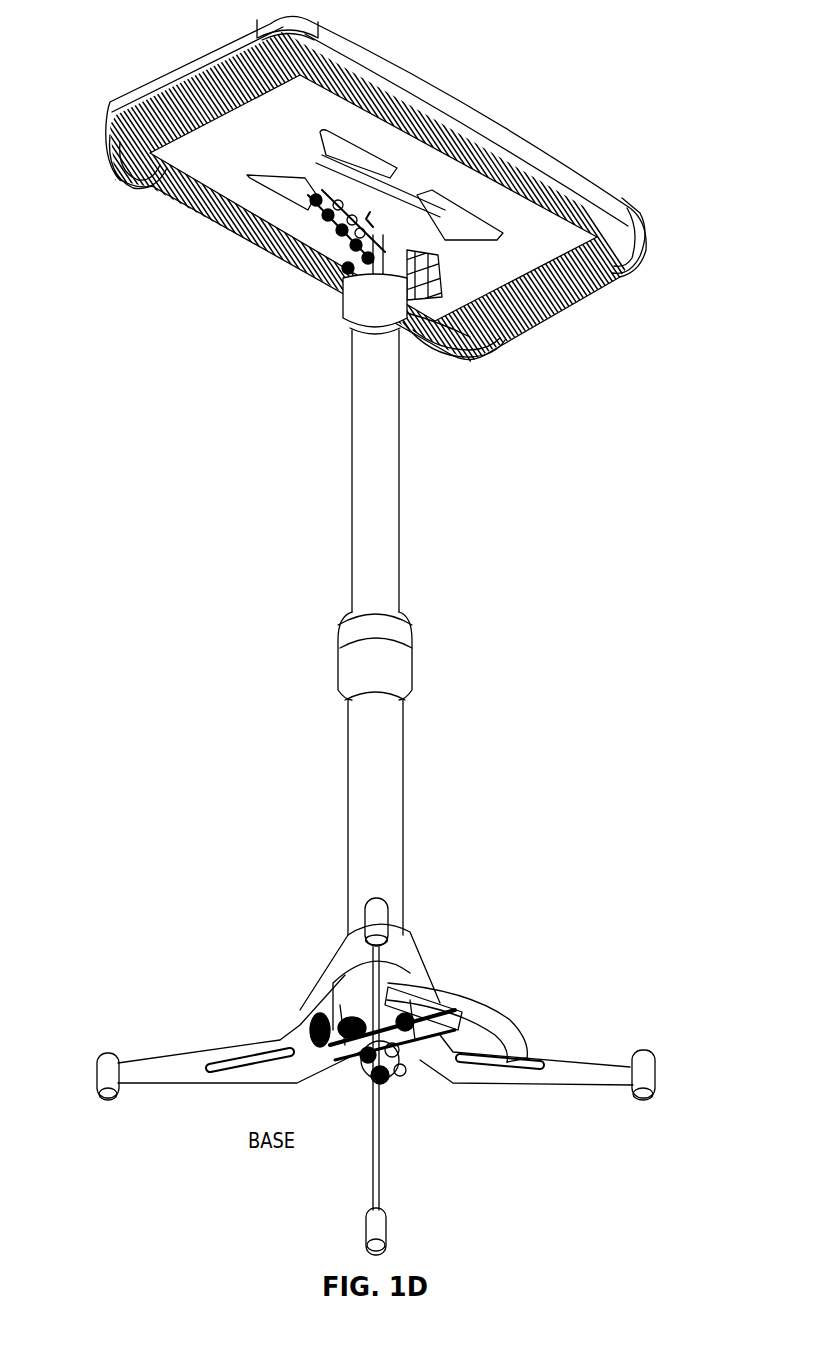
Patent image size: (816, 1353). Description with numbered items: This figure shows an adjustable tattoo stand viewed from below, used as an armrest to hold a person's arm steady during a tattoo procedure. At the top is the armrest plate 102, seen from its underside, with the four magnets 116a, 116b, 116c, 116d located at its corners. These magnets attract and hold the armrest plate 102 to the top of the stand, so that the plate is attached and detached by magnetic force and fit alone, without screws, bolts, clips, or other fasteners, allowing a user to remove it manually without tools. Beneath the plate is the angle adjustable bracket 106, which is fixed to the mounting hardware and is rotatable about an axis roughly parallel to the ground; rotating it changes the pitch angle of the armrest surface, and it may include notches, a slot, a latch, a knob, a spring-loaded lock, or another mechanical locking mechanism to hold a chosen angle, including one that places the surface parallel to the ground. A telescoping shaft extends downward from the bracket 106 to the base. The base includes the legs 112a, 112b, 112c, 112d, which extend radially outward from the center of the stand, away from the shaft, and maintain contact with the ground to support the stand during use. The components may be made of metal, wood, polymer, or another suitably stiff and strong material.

The armrest plate 102 is at (165, 66).
The angle adjustable bracket 106 is at (340, 295).
The magnet 116a is at (150, 172).
The magnet 116b is at (255, 55).
The magnet 116c is at (615, 248).
The magnet 116d is at (455, 345).
The leg 112a is at (200, 1070).
The leg 112b is at (378, 1184).
The leg 112c is at (390, 957).
The leg 112d is at (580, 1070).